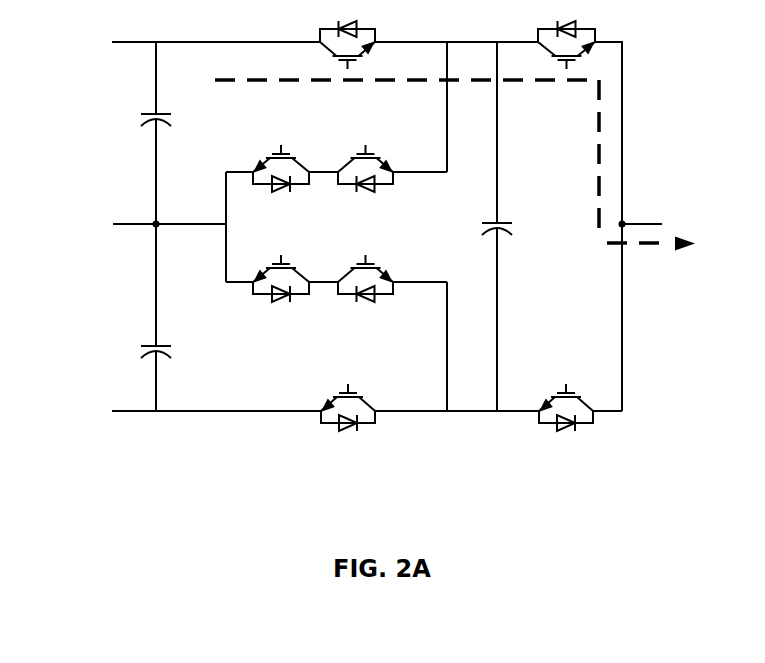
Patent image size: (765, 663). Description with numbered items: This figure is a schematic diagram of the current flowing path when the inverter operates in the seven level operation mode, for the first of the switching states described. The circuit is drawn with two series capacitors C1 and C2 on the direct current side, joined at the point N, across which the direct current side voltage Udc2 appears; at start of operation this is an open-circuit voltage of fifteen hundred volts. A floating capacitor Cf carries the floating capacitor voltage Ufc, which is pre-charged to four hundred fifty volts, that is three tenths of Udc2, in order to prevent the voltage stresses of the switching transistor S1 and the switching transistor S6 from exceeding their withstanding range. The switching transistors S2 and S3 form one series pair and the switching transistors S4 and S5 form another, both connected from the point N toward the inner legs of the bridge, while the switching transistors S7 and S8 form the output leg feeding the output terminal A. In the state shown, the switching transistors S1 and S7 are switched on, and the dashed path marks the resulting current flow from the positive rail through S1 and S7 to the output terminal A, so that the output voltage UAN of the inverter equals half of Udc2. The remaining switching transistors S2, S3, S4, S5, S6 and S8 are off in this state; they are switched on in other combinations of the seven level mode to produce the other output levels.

The switching transistor S1 is at (336, 45).
The switching transistor S2 is at (282, 154).
The switching transistor S3 is at (392, 154).
The switching transistor S4 is at (282, 295).
The switching transistor S5 is at (392, 295).
The switching transistor S6 is at (363, 403).
The switching transistor S7 is at (555, 45).
The switching transistor S8 is at (566, 394).
The DC-link capacitor C1 is at (139, 124).
The DC-link capacitor C2 is at (139, 339).
The flying capacitor Cf is at (509, 216).
The floating capacitor voltage Ufc is at (517, 226).
The neutral point N is at (169, 212).
The output terminal A is at (641, 212).
The direct current side voltage Udc2 is at (111, 226).
The output voltage UAN is at (455, 278).